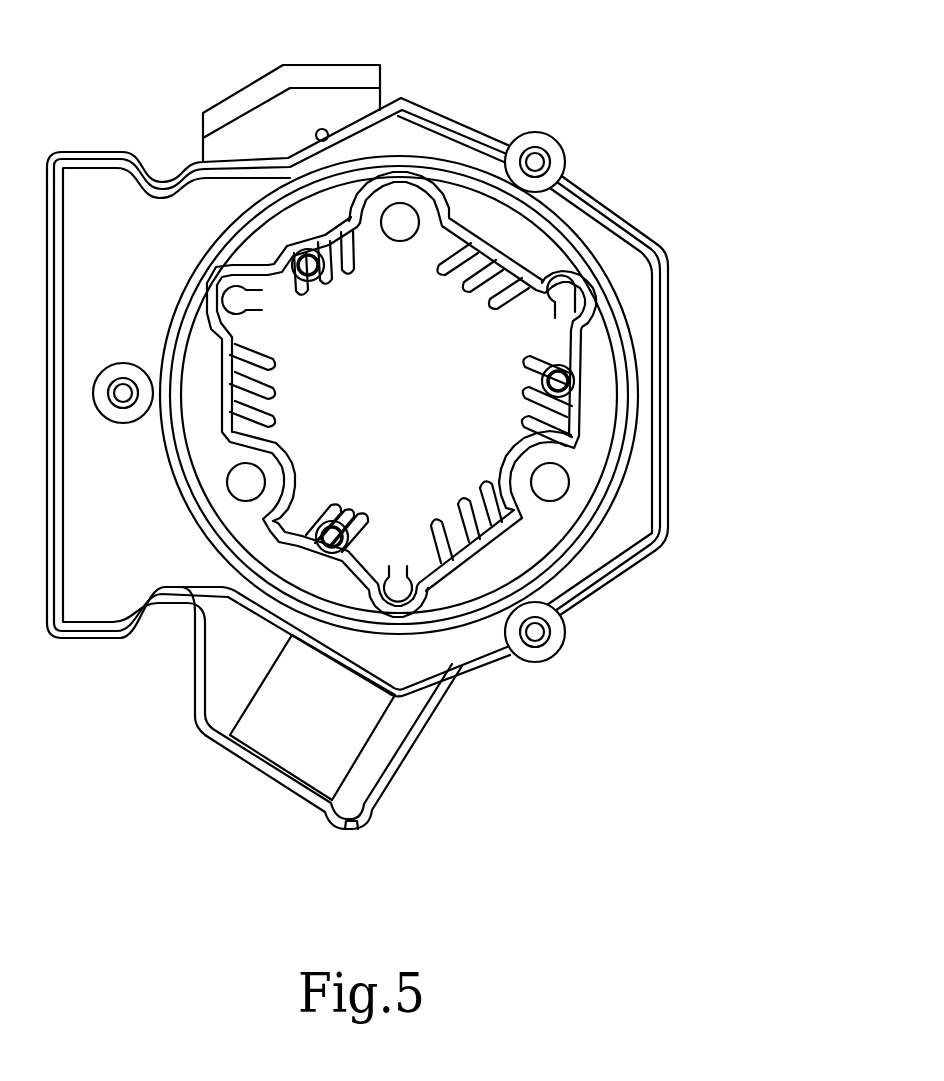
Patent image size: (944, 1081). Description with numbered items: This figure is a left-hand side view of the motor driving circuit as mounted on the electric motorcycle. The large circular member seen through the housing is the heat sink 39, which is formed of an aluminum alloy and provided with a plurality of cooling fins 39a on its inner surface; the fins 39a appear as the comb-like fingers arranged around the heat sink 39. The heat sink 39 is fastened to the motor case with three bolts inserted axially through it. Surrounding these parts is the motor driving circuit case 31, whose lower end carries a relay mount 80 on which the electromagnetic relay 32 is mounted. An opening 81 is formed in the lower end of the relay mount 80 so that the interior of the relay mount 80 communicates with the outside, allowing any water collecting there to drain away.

The motor driving circuit case 31 is at (468, 125).
The electromagnetic relay 32 is at (340, 728).
The heat sink 39 is at (422, 366).
The cooling fins 39a is at (450, 318).
The relay mount 80 is at (220, 690).
The opening 81 is at (358, 831).